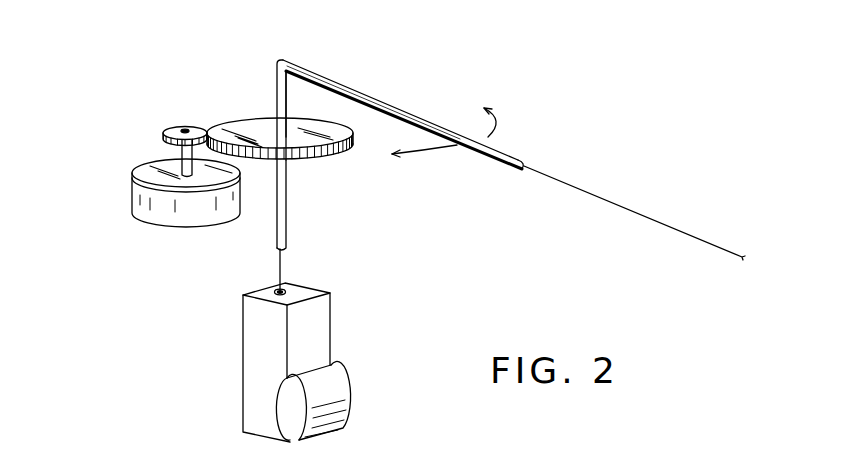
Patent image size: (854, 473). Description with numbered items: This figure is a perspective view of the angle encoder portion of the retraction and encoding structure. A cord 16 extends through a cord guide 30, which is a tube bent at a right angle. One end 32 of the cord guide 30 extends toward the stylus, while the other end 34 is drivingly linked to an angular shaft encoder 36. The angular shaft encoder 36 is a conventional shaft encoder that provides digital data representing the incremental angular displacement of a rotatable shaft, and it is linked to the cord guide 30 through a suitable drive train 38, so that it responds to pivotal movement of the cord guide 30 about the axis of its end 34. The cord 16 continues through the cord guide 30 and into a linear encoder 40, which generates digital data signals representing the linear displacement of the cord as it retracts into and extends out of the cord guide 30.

The cord 16 is at (612, 202).
The cord guide 30 is at (383, 95).
The end of cord guide 32 is at (322, 75).
The other end of cord guide 34 is at (277, 82).
The angular shaft encoder 36 is at (147, 222).
The drive train 38 is at (327, 160).
The linear encoder 40 is at (247, 350).